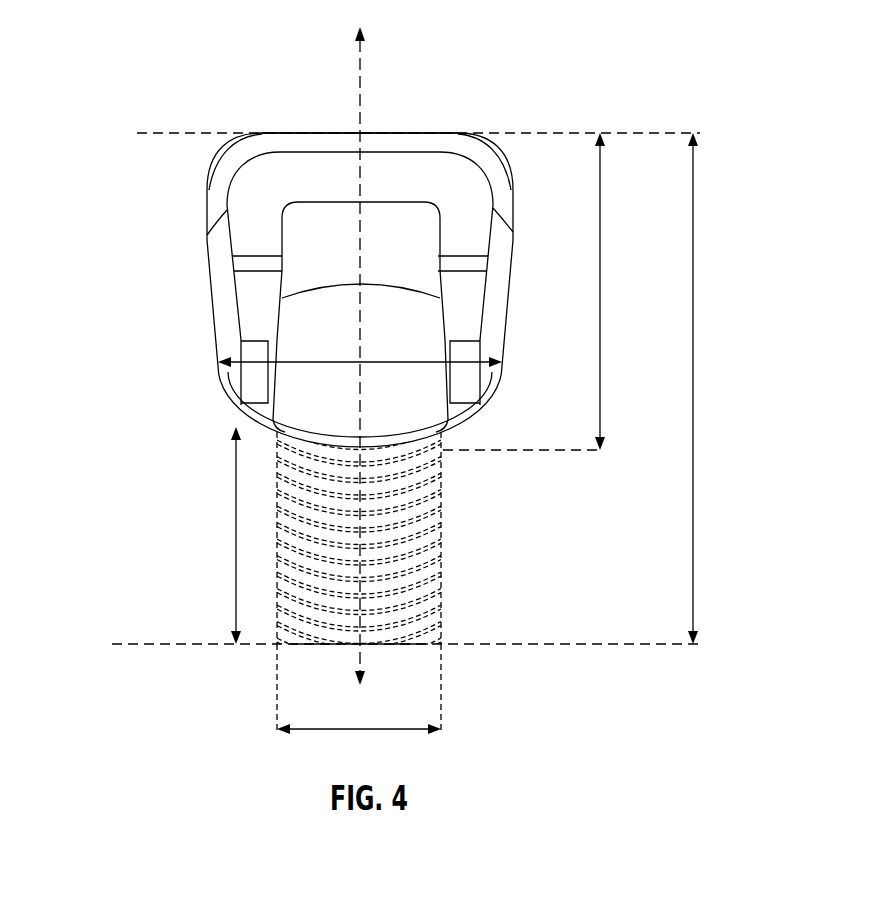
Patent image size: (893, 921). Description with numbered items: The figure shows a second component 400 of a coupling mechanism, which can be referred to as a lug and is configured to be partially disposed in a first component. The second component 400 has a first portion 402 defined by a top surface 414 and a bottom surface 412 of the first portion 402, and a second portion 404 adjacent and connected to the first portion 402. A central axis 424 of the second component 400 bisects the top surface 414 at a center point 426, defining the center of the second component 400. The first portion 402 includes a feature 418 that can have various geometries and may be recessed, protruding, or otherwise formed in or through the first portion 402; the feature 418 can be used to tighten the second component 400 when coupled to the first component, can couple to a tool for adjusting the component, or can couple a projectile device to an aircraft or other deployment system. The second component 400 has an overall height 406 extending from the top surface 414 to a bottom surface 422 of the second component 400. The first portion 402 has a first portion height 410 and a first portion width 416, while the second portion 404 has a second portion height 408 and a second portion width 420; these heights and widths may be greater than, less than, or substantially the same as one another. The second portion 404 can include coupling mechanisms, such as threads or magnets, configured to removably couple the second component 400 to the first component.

The second component 400 is at (122, 78).
The first portion 402 is at (137, 133).
The second portion 404 is at (137, 450).
The overall height 406 is at (693, 368).
The second portion height 408 is at (236, 535).
The first portion height 410 is at (600, 292).
The bottom surface 412 is at (480, 415).
The top surface 414 is at (220, 178).
The first portion width 416 is at (375, 363).
The feature 418 is at (262, 330).
The second portion width 420 is at (358, 727).
The bottom surface 422 is at (417, 647).
The central axis 424 is at (362, 102).
The center point 426 is at (315, 124).